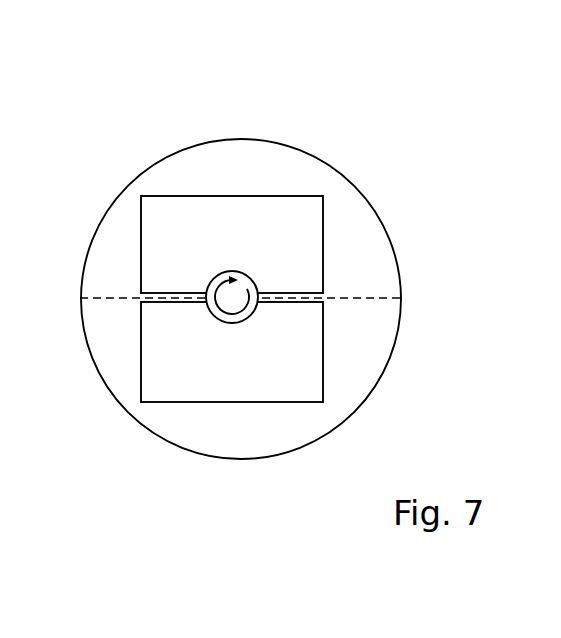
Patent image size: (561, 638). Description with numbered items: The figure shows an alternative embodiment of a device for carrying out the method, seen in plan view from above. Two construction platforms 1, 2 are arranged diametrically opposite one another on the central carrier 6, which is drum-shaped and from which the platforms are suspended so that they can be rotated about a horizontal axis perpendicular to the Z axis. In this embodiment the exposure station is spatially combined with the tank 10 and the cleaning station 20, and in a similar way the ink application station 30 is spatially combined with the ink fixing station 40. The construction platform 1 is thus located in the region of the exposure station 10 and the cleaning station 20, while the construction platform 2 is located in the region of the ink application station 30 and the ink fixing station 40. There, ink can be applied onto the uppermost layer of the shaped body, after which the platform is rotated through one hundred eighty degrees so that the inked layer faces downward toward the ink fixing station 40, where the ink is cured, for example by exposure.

The construction platform 1 is at (323, 330).
The construction platform 2 is at (172, 222).
The central carrier 6 is at (253, 275).
The exposure station 10 is at (241, 322).
The cleaning station 20 is at (238, 427).
The ink application station 30 is at (241, 303).
The ink fixing station 40 is at (241, 303).